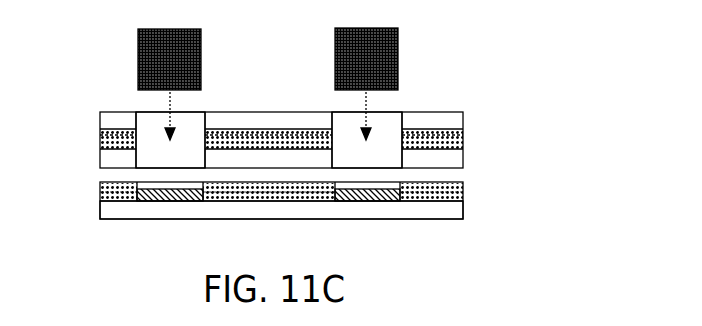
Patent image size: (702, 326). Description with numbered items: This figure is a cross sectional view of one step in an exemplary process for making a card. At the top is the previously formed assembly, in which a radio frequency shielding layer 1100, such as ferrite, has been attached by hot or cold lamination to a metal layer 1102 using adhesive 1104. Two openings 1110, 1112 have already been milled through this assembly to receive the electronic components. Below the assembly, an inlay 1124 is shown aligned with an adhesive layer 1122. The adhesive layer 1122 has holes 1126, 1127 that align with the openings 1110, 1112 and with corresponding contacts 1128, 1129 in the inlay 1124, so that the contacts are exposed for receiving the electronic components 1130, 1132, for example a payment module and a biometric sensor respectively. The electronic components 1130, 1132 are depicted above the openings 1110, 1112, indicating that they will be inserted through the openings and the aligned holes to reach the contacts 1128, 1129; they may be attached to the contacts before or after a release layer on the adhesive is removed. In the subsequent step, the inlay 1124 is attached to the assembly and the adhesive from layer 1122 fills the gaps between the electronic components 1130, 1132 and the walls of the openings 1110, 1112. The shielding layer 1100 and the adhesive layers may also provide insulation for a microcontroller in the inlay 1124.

The radio frequency shielding layer 1100 is at (463, 160).
The metal layer 1102 is at (463, 118).
The adhesive 1104 is at (463, 143).
The opening 1110 is at (205, 112).
The opening 1112 is at (402, 112).
The adhesive layer 1122 is at (463, 190).
The inlay 1124 is at (463, 213).
The hole 1126 is at (98, 183).
The hole 1127 is at (402, 202).
The contact 1128 is at (165, 201).
The contact 1129 is at (363, 202).
The electronic component 1130 is at (169, 84).
The electronic component 1132 is at (366, 84).